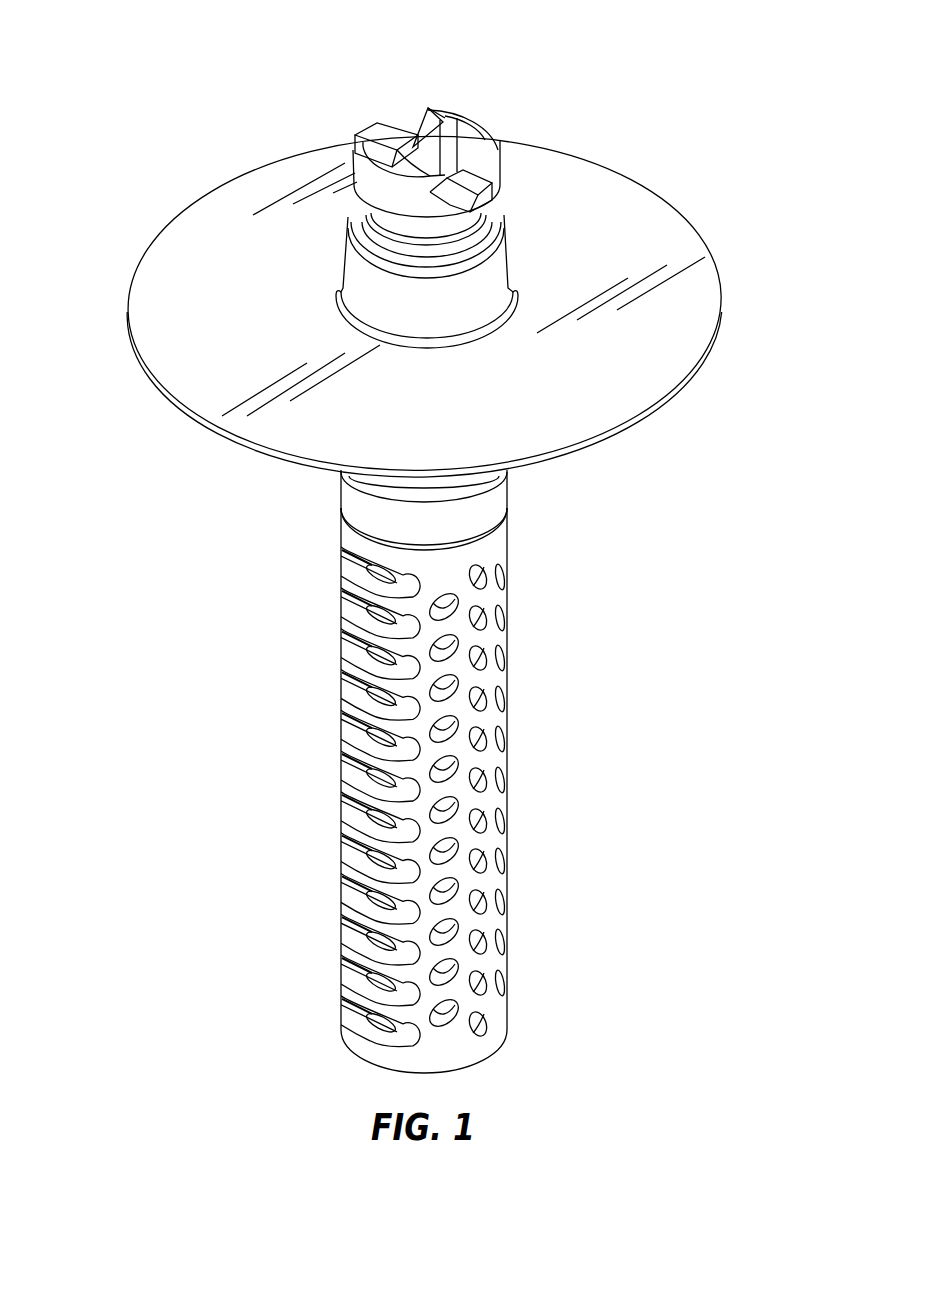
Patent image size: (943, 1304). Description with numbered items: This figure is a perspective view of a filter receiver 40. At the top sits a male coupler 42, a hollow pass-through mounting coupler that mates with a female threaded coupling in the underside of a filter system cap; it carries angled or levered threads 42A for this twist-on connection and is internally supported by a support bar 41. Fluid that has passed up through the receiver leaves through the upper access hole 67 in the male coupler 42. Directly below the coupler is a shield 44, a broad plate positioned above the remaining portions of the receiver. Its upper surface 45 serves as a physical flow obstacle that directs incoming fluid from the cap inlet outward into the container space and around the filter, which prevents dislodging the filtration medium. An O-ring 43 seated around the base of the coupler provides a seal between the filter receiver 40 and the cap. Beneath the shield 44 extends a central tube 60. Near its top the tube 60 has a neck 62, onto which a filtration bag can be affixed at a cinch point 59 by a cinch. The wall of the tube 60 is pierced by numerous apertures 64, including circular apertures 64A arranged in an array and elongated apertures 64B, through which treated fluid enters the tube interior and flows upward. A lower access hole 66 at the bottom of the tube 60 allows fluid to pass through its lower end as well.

The filter receiver 40 is at (128, 48).
The support bar 41 is at (428, 108).
The male coupler 42 is at (448, 117).
The angled threads 42A is at (507, 180).
The O-ring 43 is at (500, 228).
The shield 44 is at (133, 265).
The upper surface 45 is at (585, 371).
The cinch point 59 is at (341, 492).
The tube 60 is at (523, 839).
The neck 62 is at (508, 488).
The apertures 64 is at (507, 620).
The circular apertures 64A is at (507, 703).
The elongated apertures 64B is at (375, 695).
The lower access hole 66 is at (477, 1063).
The upper access hole 67 is at (410, 120).